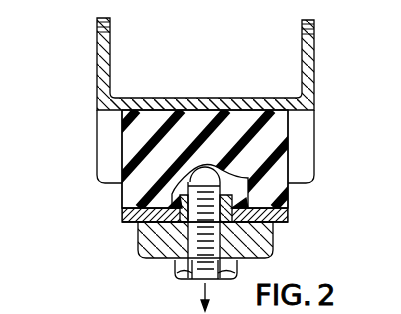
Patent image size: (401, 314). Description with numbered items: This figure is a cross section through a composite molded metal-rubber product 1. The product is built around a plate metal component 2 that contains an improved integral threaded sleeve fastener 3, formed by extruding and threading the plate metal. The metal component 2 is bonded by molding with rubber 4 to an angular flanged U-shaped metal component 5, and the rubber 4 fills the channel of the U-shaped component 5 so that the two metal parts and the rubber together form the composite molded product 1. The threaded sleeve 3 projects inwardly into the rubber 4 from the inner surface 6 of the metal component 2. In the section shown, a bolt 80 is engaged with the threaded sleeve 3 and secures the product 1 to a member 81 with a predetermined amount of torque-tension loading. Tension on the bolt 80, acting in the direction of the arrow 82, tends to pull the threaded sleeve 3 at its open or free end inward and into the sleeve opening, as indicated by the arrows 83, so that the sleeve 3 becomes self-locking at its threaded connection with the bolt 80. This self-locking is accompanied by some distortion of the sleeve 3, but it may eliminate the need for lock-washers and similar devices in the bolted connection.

The composite molded product 1 is at (316, 60).
The metal component 2 is at (123, 212).
The threaded sleeve fastener 3 is at (264, 204).
The rubber 4 is at (130, 143).
The U-shaped metal component 5 is at (157, 104).
The inner surface 6 is at (268, 207).
The bolt 80 is at (173, 267).
The member 81 is at (156, 245).
The arrow 82 is at (202, 297).
The arrows 83 is at (240, 172).